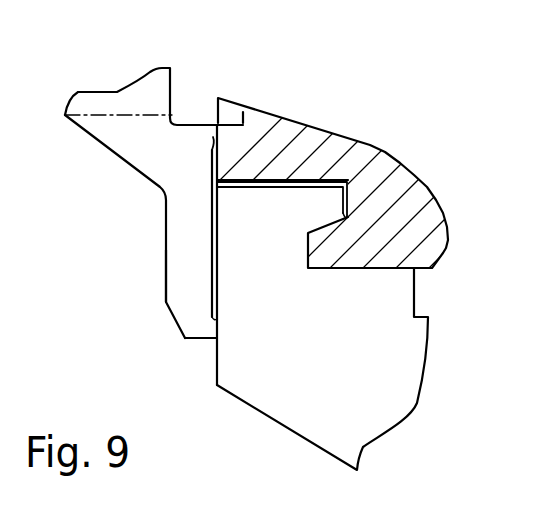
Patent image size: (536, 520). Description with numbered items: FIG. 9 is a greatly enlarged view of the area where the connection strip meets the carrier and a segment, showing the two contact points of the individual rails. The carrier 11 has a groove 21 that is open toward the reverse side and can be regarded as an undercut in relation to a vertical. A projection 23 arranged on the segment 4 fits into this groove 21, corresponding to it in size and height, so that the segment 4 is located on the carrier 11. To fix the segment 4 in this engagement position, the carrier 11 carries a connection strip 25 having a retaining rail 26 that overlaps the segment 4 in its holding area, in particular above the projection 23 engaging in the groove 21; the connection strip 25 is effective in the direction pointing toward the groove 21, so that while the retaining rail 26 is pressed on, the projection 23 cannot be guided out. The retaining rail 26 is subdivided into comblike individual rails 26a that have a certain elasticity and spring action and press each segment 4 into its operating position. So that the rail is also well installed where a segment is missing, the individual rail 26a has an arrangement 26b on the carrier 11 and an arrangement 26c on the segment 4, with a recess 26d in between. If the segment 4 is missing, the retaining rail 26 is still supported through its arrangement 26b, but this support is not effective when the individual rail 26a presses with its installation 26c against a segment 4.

The segment 4 is at (400, 400).
The carrier 11 is at (417, 233).
The groove 21 is at (333, 178).
The projection 23 is at (318, 217).
The connection strip 25 is at (125, 102).
The retaining rail 26 is at (143, 155).
The individual rail 26a is at (178, 285).
The arrangement on the carrier 26b is at (213, 137).
The arrangement on the segment 26c is at (212, 327).
The recess 26d is at (215, 270).